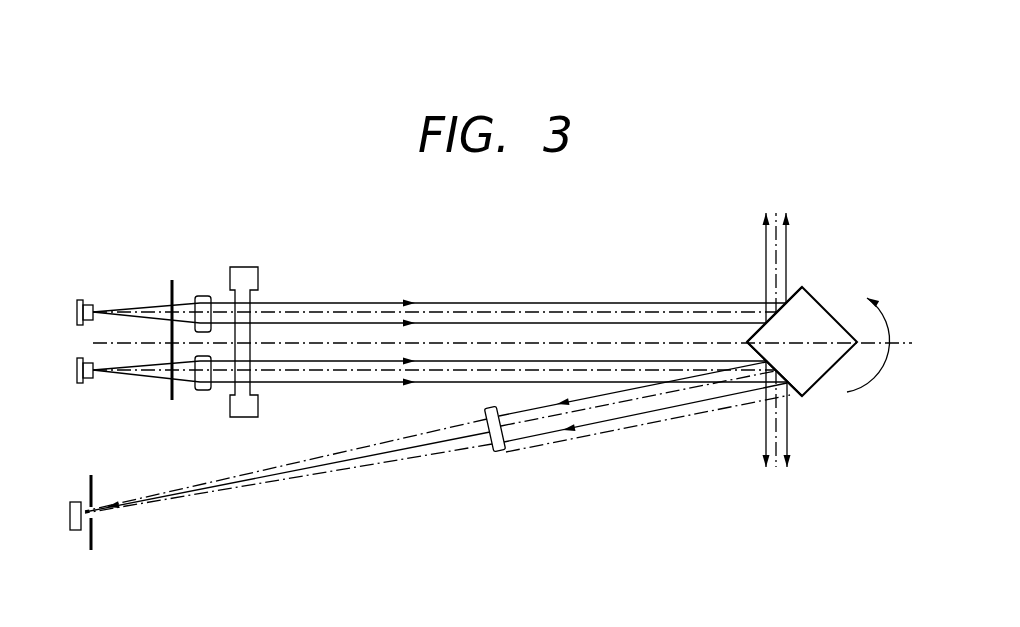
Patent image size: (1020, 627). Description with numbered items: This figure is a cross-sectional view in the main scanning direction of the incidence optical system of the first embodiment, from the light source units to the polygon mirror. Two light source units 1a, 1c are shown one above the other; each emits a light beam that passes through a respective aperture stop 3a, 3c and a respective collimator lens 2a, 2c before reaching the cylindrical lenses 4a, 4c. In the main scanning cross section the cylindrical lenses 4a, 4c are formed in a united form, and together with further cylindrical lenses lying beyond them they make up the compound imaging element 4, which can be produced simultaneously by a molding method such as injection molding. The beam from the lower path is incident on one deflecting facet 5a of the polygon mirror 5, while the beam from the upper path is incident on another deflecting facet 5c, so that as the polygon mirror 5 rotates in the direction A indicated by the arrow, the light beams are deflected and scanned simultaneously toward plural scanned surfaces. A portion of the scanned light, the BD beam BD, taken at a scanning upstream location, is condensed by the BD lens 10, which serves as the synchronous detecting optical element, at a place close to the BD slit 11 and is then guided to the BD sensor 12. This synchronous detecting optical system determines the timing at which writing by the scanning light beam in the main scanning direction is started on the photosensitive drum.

The light source unit 1a is at (80, 384).
The light source unit 1c is at (80, 300).
The collimator lens 2a is at (203, 391).
The collimator lens 2c is at (200, 296).
The aperture stop 3a is at (172, 398).
The aperture stop 3c is at (172, 283).
The compound imaging element 4 is at (248, 267).
The cylindrical lens 4a is at (247, 383).
The cylindrical lens 4c is at (247, 310).
The polygon mirror 5 is at (800, 349).
The deflecting facet 5a is at (801, 398).
The deflecting facet 5c is at (801, 287).
The BD lens 10 is at (500, 452).
The BD slit 11 is at (92, 540).
The BD sensor 12 is at (73, 532).
The BD beam BD is at (617, 404).
The rotation direction A is at (868, 335).